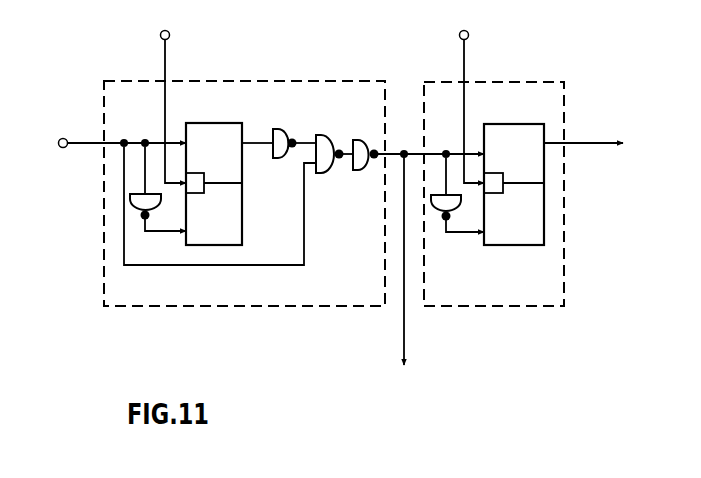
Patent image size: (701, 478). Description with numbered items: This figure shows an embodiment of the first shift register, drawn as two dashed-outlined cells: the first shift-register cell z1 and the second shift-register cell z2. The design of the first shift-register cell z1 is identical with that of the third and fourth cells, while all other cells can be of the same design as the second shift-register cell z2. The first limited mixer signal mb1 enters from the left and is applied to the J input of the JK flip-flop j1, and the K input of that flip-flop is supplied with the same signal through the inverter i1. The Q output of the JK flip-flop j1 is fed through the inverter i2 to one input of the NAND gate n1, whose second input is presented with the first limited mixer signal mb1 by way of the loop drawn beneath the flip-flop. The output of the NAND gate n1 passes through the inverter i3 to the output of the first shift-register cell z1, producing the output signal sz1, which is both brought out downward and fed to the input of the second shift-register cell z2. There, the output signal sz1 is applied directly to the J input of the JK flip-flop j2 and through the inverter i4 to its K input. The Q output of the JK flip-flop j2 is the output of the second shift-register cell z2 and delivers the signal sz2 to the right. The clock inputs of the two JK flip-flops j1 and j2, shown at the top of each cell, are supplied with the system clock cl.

The first limited mixer signal mb1 is at (116, 125).
The system clock cl is at (320, 91).
The JK flip-flop j1 is at (218, 123).
The inverter i1 is at (136, 203).
The inverter i2 is at (280, 130).
The NAND gate n1 is at (327, 133).
The inverter i3 is at (357, 175).
The output signal sz1 is at (402, 271).
The JK flip-flop j2 is at (510, 124).
The inverter i4 is at (438, 212).
The signal sz2 is at (600, 144).
The first shift-register cell z1 is at (257, 306).
The second shift-register cell z2 is at (493, 306).